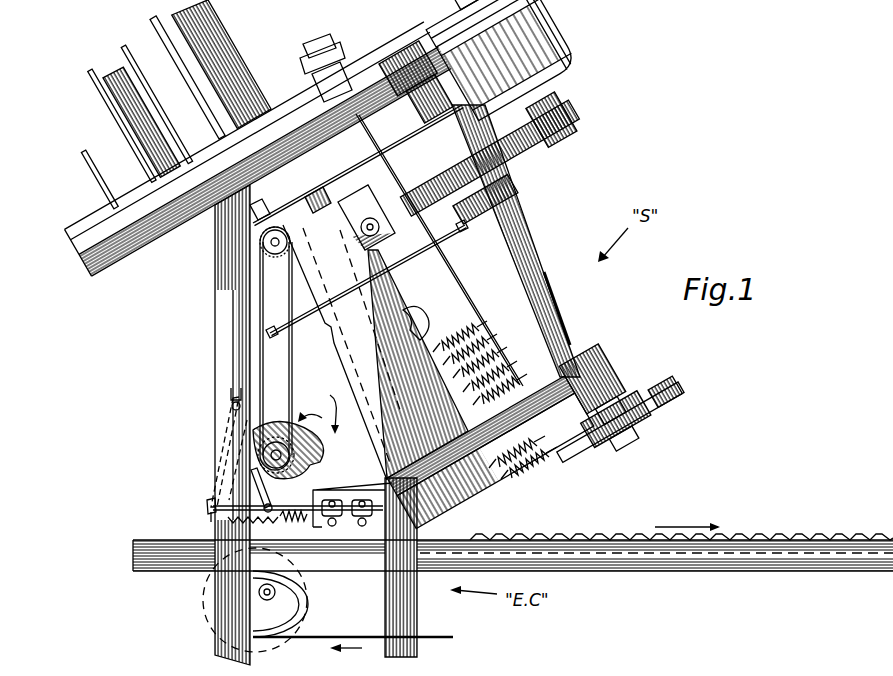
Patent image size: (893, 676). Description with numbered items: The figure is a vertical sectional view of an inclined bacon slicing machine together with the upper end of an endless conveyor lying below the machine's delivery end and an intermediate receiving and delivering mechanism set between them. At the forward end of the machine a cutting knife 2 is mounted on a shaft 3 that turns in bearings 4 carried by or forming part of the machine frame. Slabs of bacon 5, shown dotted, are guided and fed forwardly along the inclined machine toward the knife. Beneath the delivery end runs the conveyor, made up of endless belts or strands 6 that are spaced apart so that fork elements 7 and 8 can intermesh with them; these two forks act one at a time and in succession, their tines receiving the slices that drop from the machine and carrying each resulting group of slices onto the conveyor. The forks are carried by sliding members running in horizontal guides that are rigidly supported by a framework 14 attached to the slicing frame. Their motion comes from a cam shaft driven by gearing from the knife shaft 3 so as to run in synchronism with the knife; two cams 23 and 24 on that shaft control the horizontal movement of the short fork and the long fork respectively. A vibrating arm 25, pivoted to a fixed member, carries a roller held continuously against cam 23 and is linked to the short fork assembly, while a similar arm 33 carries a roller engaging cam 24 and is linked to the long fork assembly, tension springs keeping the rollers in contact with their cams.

The cutting knife 2 is at (570, 462).
The shaft 3 is at (565, 323).
The bearings 4 is at (613, 370).
The slabs of bacon 5 is at (316, 205).
The endless belts or strands 6 is at (320, 632).
The fork element 7 is at (368, 524).
The fork element 8 is at (334, 524).
The framework 14 is at (345, 488).
The cam 23 is at (266, 427).
The cam 24 is at (306, 464).
The vibrating arm 25 is at (210, 501).
The arm 33 is at (267, 486).